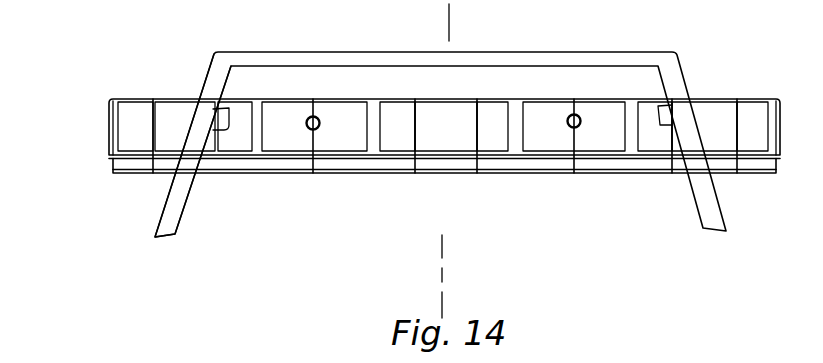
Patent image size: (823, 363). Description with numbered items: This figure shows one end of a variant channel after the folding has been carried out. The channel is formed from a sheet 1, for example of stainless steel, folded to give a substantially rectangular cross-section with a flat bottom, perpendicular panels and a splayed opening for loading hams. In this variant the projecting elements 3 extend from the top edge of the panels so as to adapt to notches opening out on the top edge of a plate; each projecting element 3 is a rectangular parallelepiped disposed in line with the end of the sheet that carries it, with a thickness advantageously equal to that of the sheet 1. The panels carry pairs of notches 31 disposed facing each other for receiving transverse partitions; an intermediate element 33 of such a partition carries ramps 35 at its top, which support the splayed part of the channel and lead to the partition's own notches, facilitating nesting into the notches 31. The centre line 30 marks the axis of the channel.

The sheet 1 is at (337, 132).
The projecting element 3 is at (472, 126).
The center line 30 is at (442, 258).
The notch 31 is at (109, 128).
The intermediate element 33 is at (178, 217).
The ramp 35 is at (449, 24).